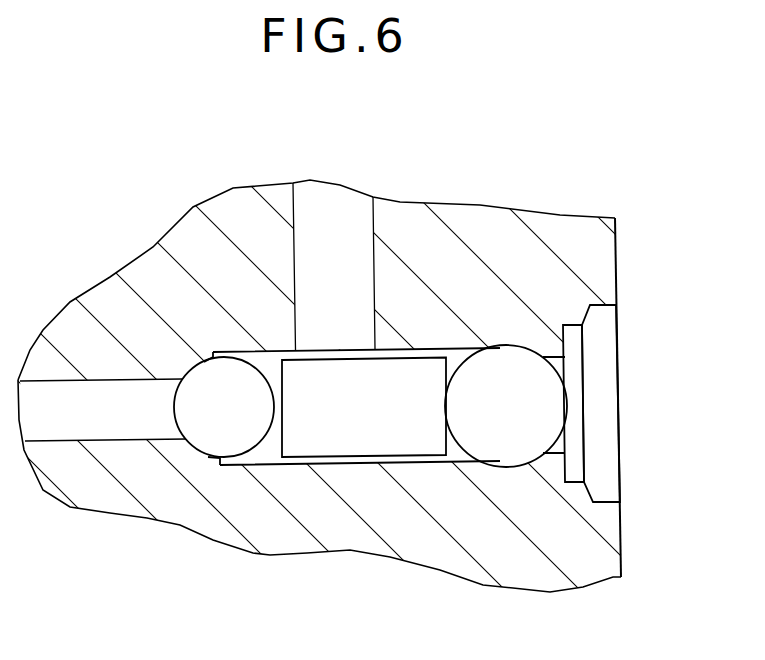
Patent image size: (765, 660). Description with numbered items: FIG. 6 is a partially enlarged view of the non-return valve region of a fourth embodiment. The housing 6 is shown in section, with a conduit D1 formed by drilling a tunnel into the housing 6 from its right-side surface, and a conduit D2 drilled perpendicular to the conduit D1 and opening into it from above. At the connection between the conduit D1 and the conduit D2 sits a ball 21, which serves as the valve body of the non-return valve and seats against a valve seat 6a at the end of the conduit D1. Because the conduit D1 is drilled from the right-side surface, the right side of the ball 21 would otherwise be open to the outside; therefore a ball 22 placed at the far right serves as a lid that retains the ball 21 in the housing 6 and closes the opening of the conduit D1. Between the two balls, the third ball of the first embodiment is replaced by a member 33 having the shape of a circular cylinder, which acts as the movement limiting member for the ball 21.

The housing 6 is at (617, 240).
The valve seat 6a is at (200, 350).
The ball 21 is at (213, 427).
The ball 22 is at (497, 442).
The member having a shape of a circular cylinder 33 is at (333, 428).
The conduit D1 is at (77, 440).
The conduit D2 is at (374, 211).